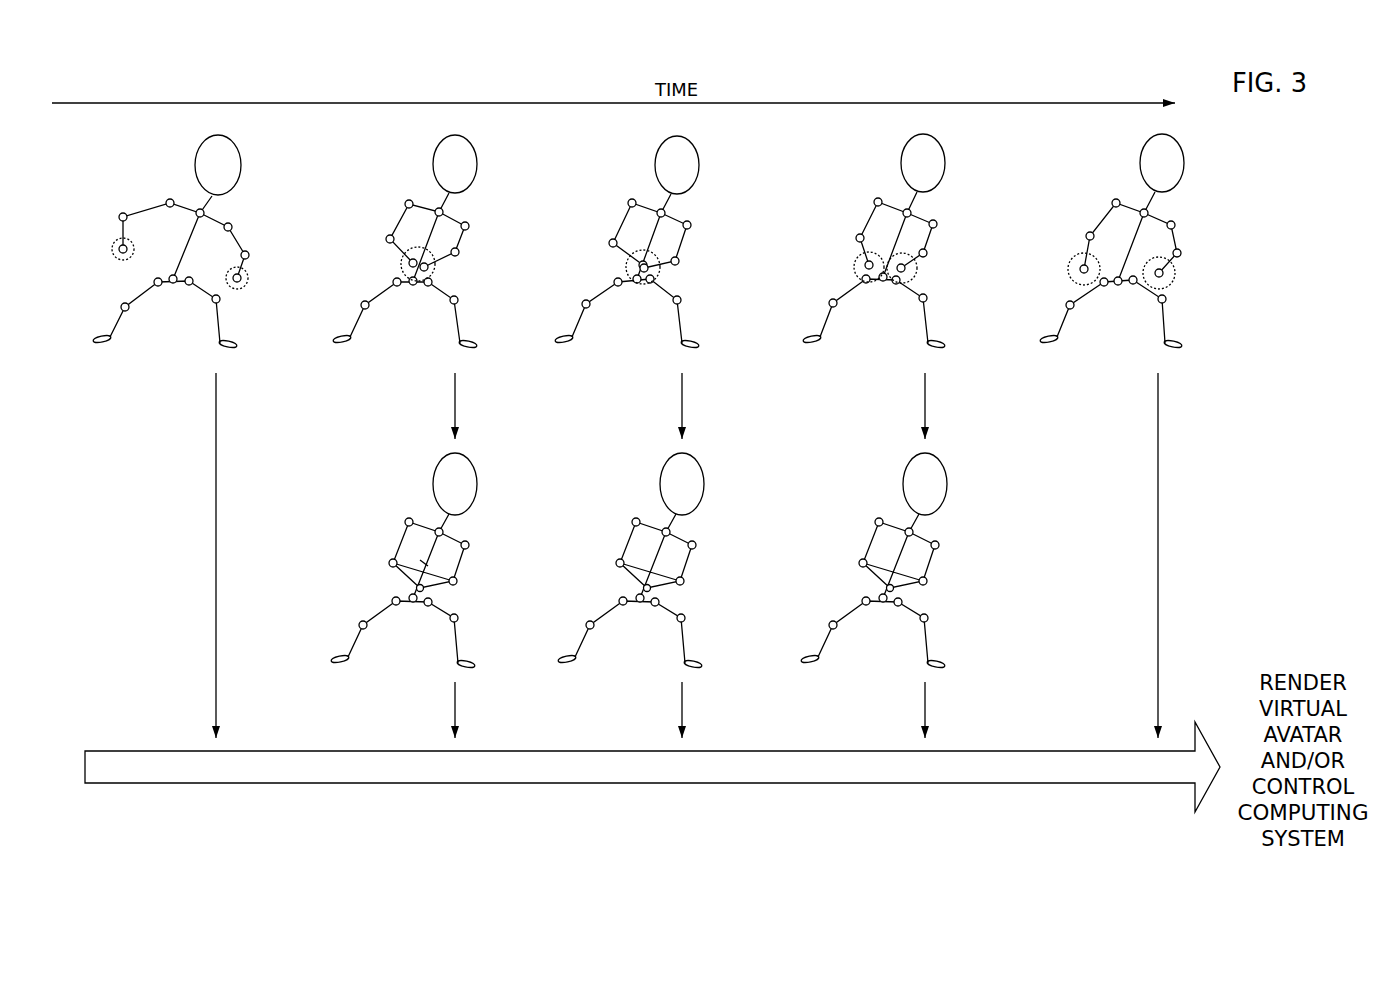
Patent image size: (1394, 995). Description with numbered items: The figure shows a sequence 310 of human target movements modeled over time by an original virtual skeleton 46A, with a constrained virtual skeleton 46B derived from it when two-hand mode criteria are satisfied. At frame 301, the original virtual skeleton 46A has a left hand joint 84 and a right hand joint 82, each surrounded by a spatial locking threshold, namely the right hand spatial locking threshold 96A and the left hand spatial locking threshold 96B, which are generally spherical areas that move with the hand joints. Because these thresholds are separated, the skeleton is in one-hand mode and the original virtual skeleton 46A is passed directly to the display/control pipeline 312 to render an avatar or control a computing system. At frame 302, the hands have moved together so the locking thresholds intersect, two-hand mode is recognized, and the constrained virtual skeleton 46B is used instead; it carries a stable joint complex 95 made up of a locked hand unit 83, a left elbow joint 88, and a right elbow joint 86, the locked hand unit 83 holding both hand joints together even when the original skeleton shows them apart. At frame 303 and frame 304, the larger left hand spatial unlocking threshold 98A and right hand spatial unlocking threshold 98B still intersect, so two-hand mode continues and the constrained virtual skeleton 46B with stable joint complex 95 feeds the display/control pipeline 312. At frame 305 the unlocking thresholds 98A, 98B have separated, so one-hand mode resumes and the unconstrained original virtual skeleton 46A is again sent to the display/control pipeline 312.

The original virtual skeleton 46A is at (204, 175).
The constrained virtual skeleton 46B is at (441, 494).
The right hand joint 82 is at (118, 242).
The left hand joint 84 is at (246, 272).
The right hand spatial locking threshold 96A is at (112, 252).
The left hand spatial locking threshold 96B is at (246, 283).
The left hand spatial unlocking threshold 98A is at (626, 262).
The right hand spatial unlocking threshold 98B is at (658, 275).
The stable joint complex 95 is at (422, 574).
The right elbow joint 86 is at (389, 563).
The left elbow joint 88 is at (458, 578).
The locked hand unit 83 is at (412, 586).
The frame 301 is at (197, 555).
The frame 302 is at (435, 555).
The frame 303 is at (662, 555).
The frame 304 is at (905, 555).
The frame 305 is at (1138, 555).
The sequence 310 is at (610, 86).
The display/control pipeline 312 is at (860, 777).